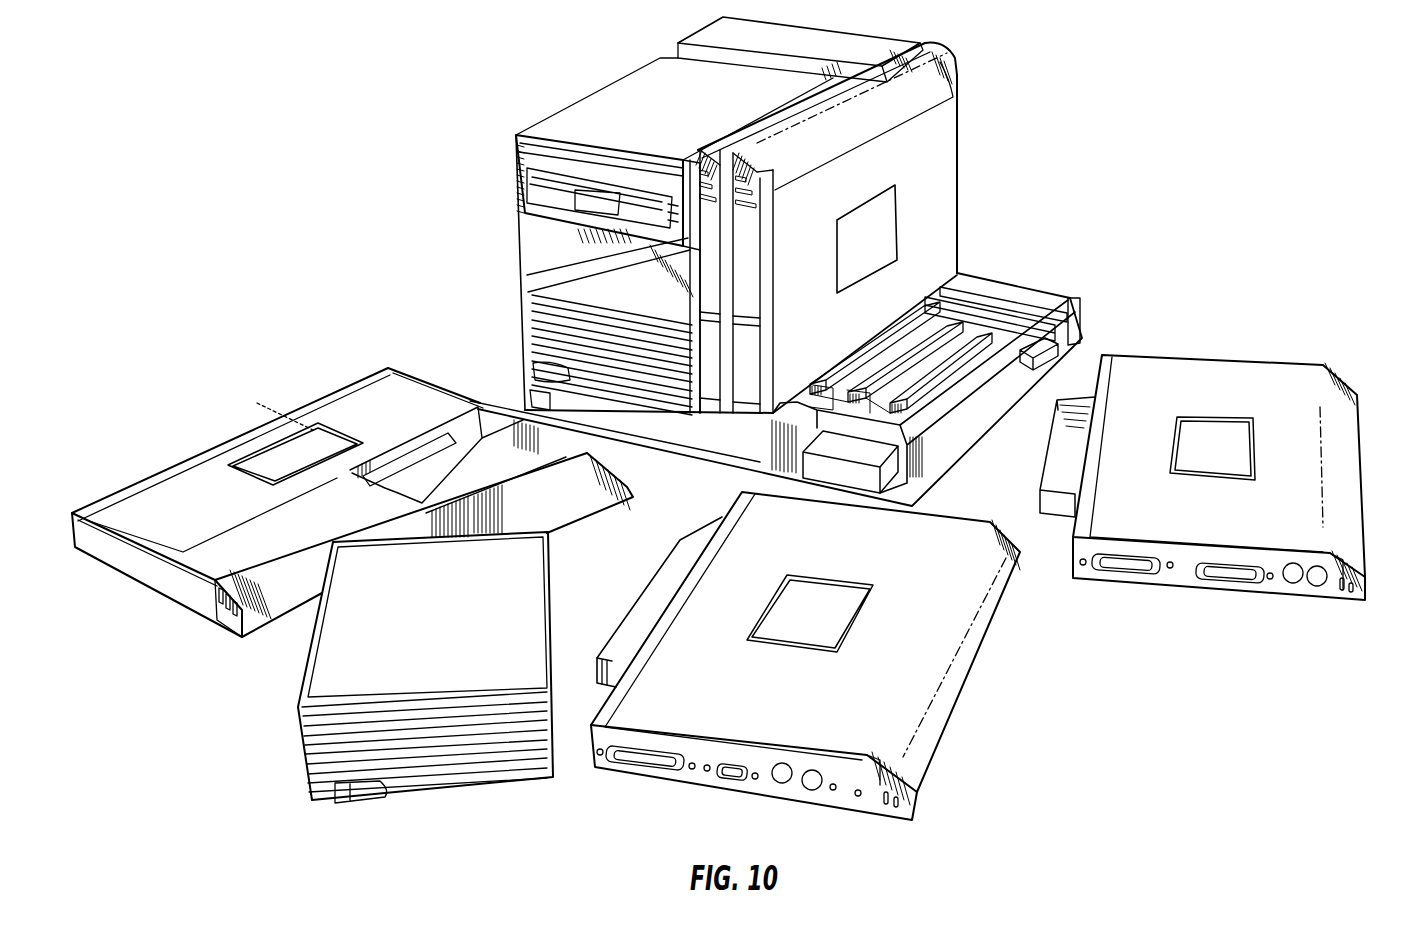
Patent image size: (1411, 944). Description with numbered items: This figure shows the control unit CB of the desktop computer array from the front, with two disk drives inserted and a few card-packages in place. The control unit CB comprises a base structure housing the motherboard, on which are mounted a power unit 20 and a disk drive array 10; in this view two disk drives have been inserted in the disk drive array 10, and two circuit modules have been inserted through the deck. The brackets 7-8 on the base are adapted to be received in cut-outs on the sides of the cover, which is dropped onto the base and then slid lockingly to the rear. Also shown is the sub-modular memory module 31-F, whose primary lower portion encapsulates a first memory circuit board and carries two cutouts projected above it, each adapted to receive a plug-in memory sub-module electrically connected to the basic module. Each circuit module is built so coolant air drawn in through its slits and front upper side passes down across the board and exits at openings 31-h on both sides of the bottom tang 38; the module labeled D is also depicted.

The control unit CB is at (975, 77).
The disk drive array 10 is at (537, 118).
The power unit 20 is at (698, 40).
The brackets on base 7-8 is at (1068, 311).
The sub-modular memory module 31-F is at (337, 388).
The air exit openings of module 31-h is at (728, 515).
The bottom tang 38 is at (648, 588).
The disk drive module D is at (496, 783).